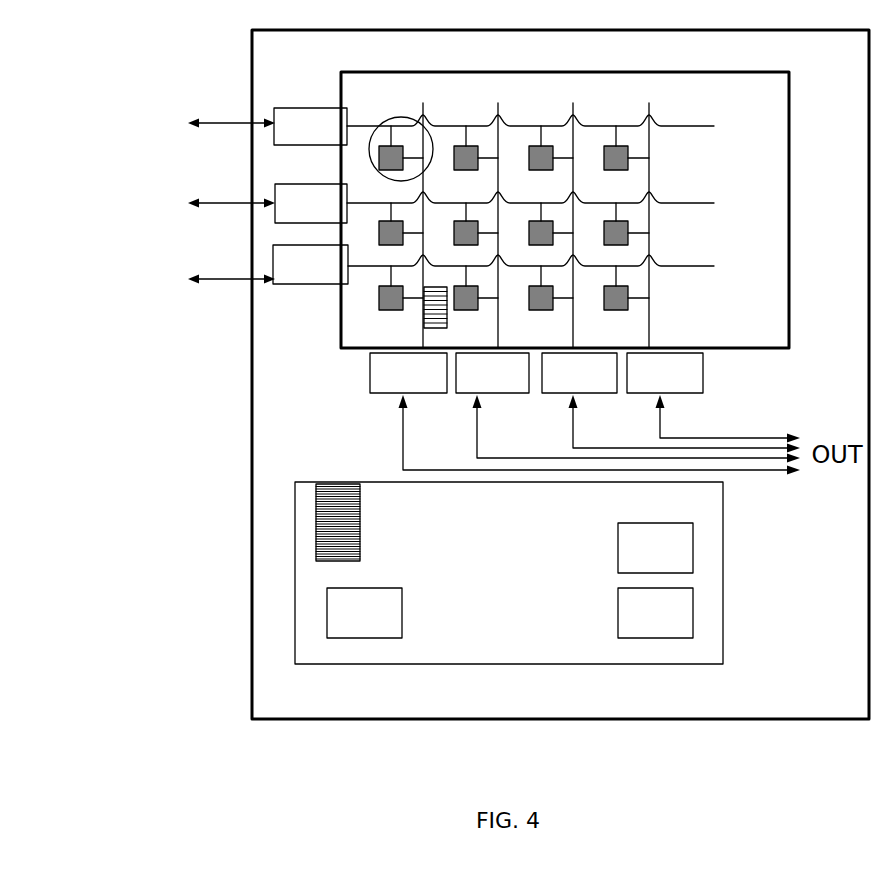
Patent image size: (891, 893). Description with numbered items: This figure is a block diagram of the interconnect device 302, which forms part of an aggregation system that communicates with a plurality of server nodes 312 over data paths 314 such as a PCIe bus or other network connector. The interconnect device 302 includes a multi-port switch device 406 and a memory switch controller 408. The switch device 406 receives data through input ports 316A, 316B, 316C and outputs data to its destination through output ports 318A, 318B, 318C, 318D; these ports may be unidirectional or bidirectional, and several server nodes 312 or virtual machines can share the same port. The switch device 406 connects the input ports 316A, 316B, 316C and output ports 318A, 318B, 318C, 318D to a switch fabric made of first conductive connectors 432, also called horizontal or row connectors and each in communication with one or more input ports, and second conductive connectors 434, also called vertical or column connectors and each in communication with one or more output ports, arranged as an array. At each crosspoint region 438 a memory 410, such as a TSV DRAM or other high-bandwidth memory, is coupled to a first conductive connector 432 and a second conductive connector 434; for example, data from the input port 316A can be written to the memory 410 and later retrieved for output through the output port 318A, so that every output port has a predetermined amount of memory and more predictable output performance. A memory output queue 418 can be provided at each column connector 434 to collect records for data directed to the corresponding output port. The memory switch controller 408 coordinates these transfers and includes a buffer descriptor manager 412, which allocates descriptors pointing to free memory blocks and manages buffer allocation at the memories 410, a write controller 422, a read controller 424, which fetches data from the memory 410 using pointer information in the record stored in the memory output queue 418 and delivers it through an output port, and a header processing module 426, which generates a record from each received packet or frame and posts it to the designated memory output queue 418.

The interconnect device 302 is at (813, 78).
The server nodes 312 is at (112, 134).
The data paths 314 is at (217, 115).
The input port 316A is at (310, 126).
The input port 316B is at (311, 203).
The input port 316C is at (310, 264).
The output port 318A is at (408, 373).
The output port 318B is at (492, 373).
The output port 318C is at (579, 373).
The output port 318D is at (665, 373).
The multi-port switch device 406 is at (760, 110).
The memory switch controller 408 is at (490, 658).
The memory 410 is at (392, 171).
The buffer descriptor manager 412 is at (360, 492).
The memory output queue 418 is at (447, 327).
The write controller 422 is at (655, 548).
The read controller 424 is at (655, 613).
The header processing module 426 is at (364, 613).
The first conductive connectors 432 is at (472, 121).
The second conductive connectors 434 is at (651, 183).
The crosspoint region 438 is at (384, 123).